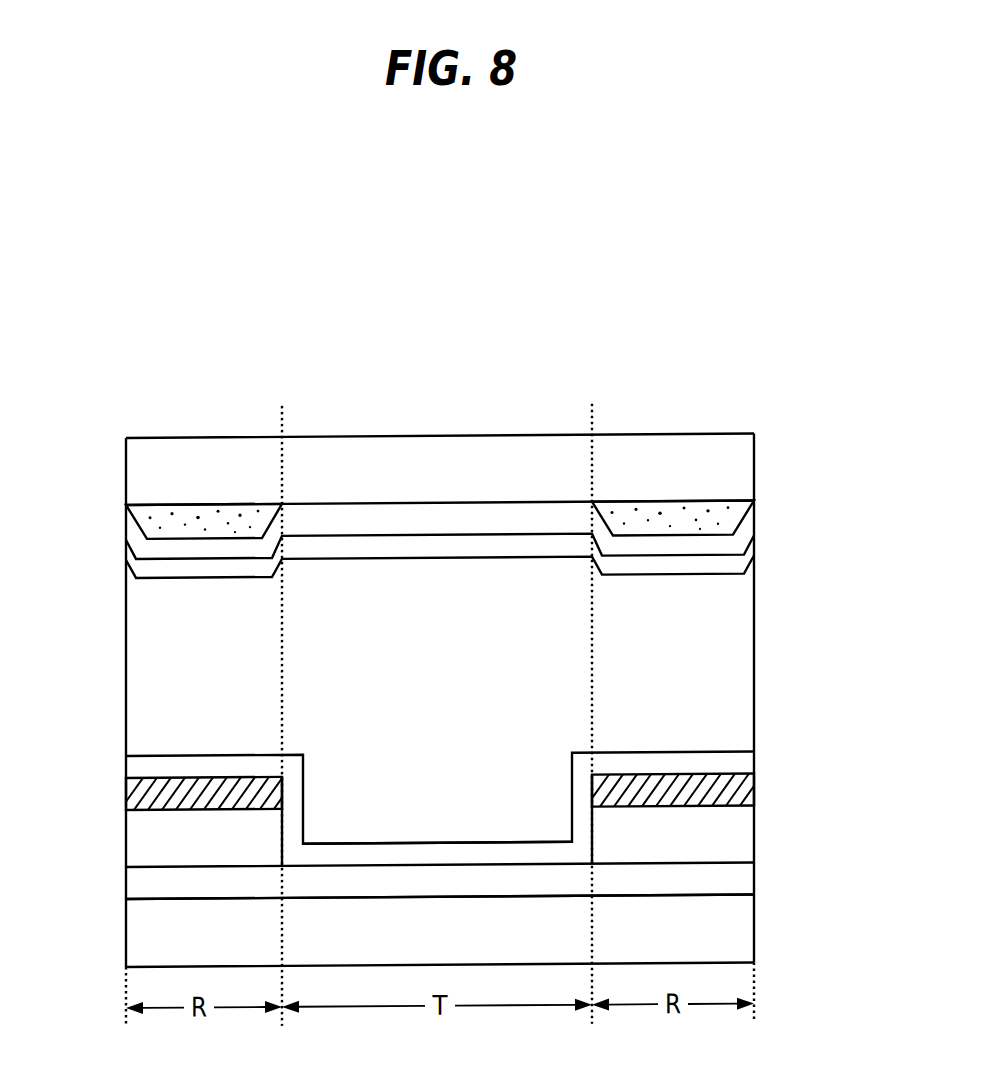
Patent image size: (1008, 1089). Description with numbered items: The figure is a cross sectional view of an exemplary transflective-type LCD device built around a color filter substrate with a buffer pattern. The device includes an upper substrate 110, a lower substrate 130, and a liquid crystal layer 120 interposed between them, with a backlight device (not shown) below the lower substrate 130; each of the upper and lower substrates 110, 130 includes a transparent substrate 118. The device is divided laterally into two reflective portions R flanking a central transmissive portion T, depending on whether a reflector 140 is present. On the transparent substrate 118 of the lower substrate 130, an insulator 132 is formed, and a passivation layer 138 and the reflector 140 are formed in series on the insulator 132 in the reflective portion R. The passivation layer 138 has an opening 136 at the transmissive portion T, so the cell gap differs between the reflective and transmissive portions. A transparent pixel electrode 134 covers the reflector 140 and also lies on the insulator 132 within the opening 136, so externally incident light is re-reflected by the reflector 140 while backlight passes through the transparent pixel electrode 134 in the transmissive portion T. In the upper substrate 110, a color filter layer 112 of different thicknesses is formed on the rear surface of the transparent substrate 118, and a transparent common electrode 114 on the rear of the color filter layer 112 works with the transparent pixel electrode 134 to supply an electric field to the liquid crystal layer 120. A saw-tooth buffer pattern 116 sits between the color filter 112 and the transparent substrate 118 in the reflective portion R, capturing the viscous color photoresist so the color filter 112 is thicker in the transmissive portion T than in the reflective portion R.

The upper substrate 110 is at (125, 440).
The liquid crystal layer 120 is at (125, 758).
The lower substrate 130 is at (125, 965).
The buffer pattern 116 is at (207, 503).
The transparent substrate 118 is at (754, 478).
The color filter layer 112 is at (754, 513).
The transparent common electrode 114 is at (754, 543).
The transparent pixel electrode 134 is at (754, 757).
The reflector 140 is at (754, 788).
The passivation layer 138 is at (754, 843).
The insulator 132 is at (754, 878).
The opening 136 is at (425, 830).